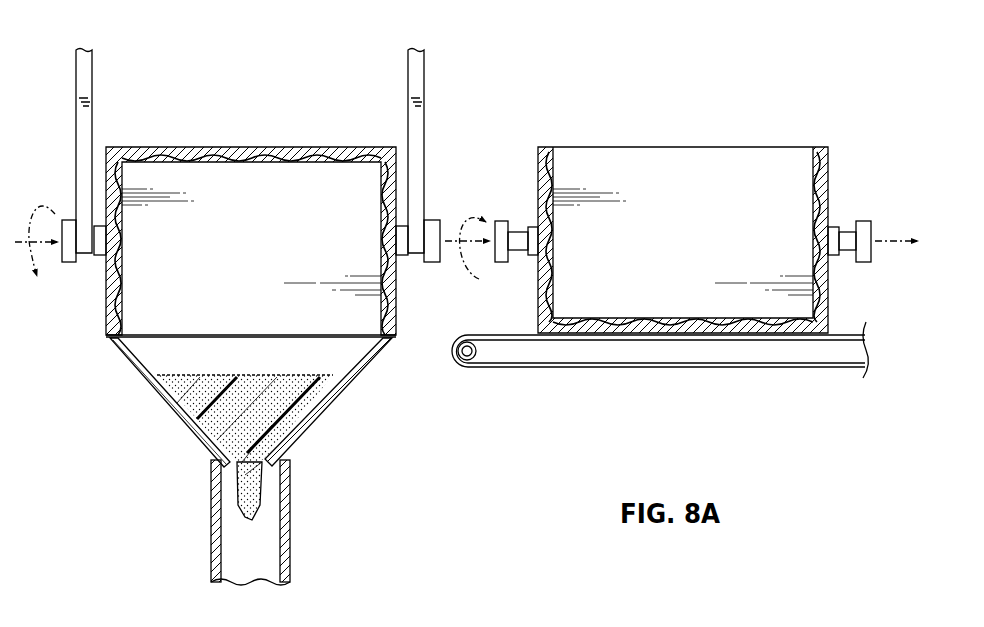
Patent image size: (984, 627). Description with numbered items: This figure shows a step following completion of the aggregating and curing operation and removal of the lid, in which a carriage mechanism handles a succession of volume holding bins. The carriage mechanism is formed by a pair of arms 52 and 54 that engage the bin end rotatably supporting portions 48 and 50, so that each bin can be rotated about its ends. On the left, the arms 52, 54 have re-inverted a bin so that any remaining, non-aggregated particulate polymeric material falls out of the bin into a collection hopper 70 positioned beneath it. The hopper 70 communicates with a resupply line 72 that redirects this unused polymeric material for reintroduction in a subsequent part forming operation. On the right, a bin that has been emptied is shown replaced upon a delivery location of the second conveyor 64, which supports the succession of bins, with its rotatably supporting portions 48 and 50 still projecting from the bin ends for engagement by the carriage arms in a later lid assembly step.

The bin end rotatably supporting portion 48 is at (530, 252).
The bin end rotatably supporting portion 50 is at (832, 254).
The arm 52 is at (84, 90).
The arm 54 is at (416, 90).
The second conveyor 64 is at (573, 364).
The collection hopper 70 is at (160, 395).
The resupply line 72 is at (213, 560).